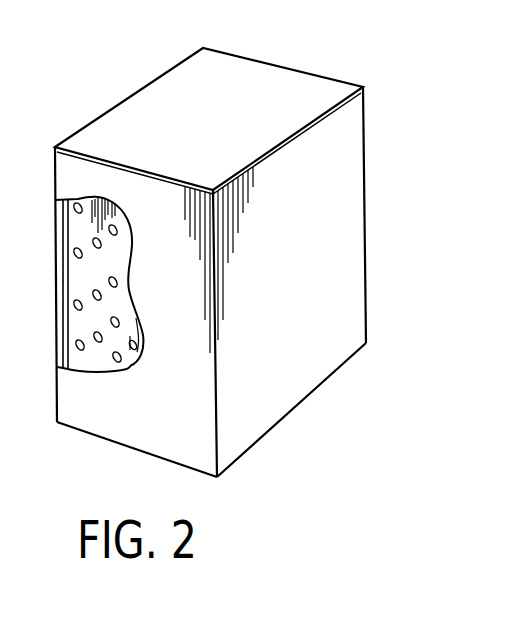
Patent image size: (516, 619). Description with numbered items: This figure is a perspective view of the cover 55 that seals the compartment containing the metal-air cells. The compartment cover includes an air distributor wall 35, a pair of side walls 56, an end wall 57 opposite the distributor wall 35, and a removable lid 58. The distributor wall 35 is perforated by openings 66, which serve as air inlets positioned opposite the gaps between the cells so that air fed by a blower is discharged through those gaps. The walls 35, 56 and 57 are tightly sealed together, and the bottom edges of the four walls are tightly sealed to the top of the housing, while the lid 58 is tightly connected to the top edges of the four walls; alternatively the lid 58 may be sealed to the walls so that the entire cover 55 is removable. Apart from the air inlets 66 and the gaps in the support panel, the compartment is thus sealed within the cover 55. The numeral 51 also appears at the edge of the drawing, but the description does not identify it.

The filter cartridge assembly 51 is at (214, 250).
The cover 55 is at (369, 184).
The side walls 56 is at (115, 422).
The end wall 57 is at (350, 258).
The removable lid 58 is at (285, 77).
The air distributor wall 35 is at (68, 248).
The openings 66 is at (83, 297).